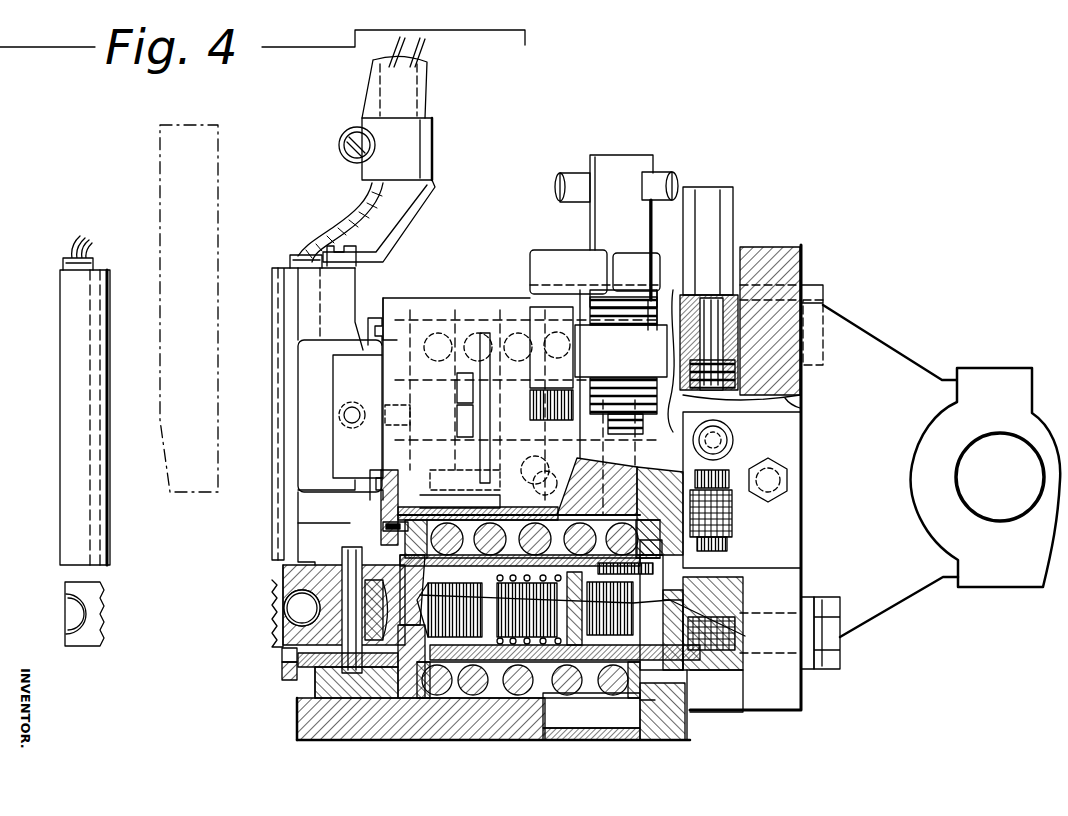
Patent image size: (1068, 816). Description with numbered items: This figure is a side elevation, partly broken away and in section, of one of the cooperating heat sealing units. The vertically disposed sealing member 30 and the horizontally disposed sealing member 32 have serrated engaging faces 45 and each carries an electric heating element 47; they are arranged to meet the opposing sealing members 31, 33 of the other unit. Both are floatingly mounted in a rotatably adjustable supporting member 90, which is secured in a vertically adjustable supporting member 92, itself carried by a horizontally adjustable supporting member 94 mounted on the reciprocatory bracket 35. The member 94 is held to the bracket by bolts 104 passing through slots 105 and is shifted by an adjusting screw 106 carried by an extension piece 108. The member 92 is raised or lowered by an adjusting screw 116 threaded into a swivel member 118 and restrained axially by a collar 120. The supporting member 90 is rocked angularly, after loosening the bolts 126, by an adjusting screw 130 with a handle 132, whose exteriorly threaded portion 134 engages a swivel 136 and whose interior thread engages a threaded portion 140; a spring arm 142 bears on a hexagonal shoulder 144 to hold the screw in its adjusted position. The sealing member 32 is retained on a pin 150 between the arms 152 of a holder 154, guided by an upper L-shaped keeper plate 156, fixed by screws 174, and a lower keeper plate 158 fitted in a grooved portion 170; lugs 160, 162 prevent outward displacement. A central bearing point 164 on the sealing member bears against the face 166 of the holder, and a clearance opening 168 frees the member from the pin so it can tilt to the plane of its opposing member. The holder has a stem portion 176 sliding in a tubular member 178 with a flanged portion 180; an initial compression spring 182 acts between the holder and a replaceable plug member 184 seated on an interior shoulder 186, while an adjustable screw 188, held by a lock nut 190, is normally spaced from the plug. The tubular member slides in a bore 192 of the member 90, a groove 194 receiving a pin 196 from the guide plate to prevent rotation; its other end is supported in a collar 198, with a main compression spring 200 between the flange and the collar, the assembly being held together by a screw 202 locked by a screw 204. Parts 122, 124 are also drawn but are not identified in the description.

The sealing member 30 is at (288, 438).
The sealing member 31 is at (73, 407).
The sealing member 32 is at (310, 575).
The sealing member 33 is at (66, 588).
The reciprocatory bracket 35 is at (768, 710).
The serrated engaging faces 45 is at (108, 612).
The electric heating element 47 is at (63, 258).
The rotatably adjustable supporting member 90 is at (483, 298).
The vertically adjustable supporting member 92 is at (655, 720).
The horizontally adjustable supporting member 94 is at (718, 675).
The bolts 104 is at (825, 293).
The slots 105 is at (800, 283).
The adjusting screw 106 is at (768, 460).
The extension piece 108 is at (800, 410).
The adjusting screw 116 is at (730, 210).
The swivel member 118 is at (745, 525).
The collar 120 is at (803, 384).
The spline 122 is at (556, 700).
The bearing 124 is at (535, 700).
The bolts 126 is at (458, 392).
The adjusting screw 130 is at (620, 158).
The handle 132 is at (668, 172).
The exteriorly threaded portion 134 is at (700, 285).
The swivel 136 is at (621, 365).
The threaded portion 140 is at (653, 423).
The spring arm 142 is at (558, 253).
The hexagonal shoulder 144 is at (625, 262).
The pin 150 is at (350, 410).
The arms 152 is at (300, 546).
The holder 154 is at (340, 376).
The keeper plate 156 is at (388, 302).
The keeper plate 158 is at (305, 700).
The ear or lug 160 is at (285, 655).
The ear or lug 162 is at (285, 678).
The central bearing point 164 is at (378, 432).
The face 166 is at (375, 625).
The clearance opening 168 is at (344, 415).
The grooved portion 170 is at (325, 720).
The screws 174 is at (372, 318).
The stem portion 176 is at (452, 705).
The tubular member 178 is at (470, 705).
The flanged portion 180 is at (430, 700).
The initial compression spring 182 is at (500, 700).
The replaceable plug member 184 is at (575, 693).
The interior shoulder 186 is at (575, 700).
The adjustable screw 188 is at (720, 625).
The lock nut 190 is at (530, 485).
The chamber or bore 192 is at (460, 503).
The groove 194 is at (465, 482).
The pin 196 is at (383, 525).
The collar 198 is at (630, 720).
The main compression spring 200 is at (615, 730).
The screw 202 is at (670, 700).
The screw 204 is at (655, 568).